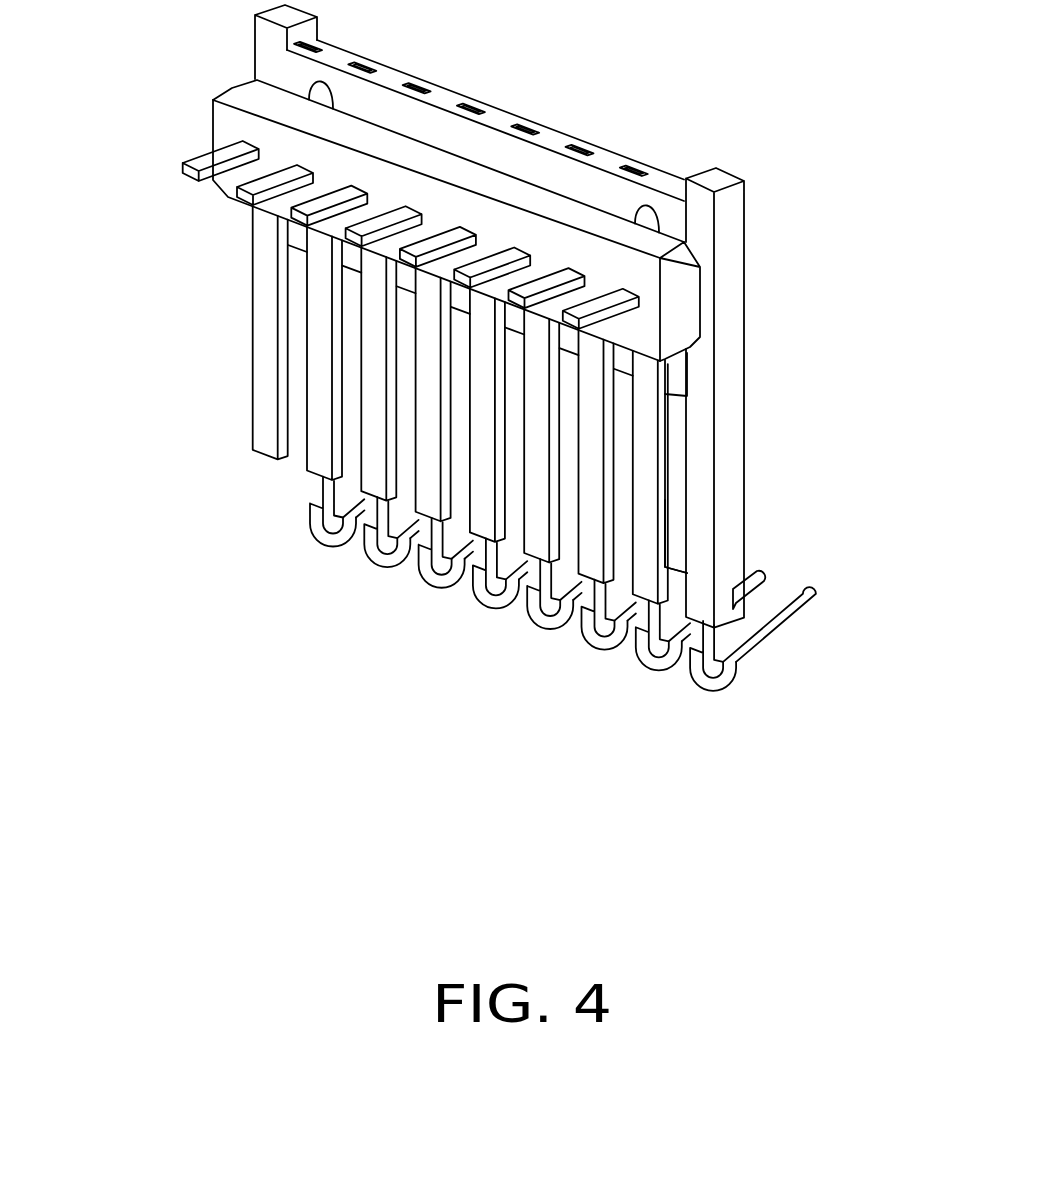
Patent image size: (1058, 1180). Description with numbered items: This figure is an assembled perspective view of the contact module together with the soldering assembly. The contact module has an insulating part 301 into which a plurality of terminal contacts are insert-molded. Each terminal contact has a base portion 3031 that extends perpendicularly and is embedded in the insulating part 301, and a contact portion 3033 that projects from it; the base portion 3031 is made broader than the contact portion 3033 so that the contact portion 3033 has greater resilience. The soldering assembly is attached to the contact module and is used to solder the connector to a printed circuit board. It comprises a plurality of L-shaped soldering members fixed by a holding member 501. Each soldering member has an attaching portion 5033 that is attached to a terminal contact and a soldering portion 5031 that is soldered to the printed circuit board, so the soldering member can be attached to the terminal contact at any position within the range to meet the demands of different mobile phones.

The holding member 501 is at (515, 213).
The soldering portion 5031 is at (203, 160).
The attaching portion 5033 is at (677, 366).
The insulating part 301 is at (725, 472).
The base portion 3031 is at (680, 570).
The contact portion 3033 is at (750, 647).